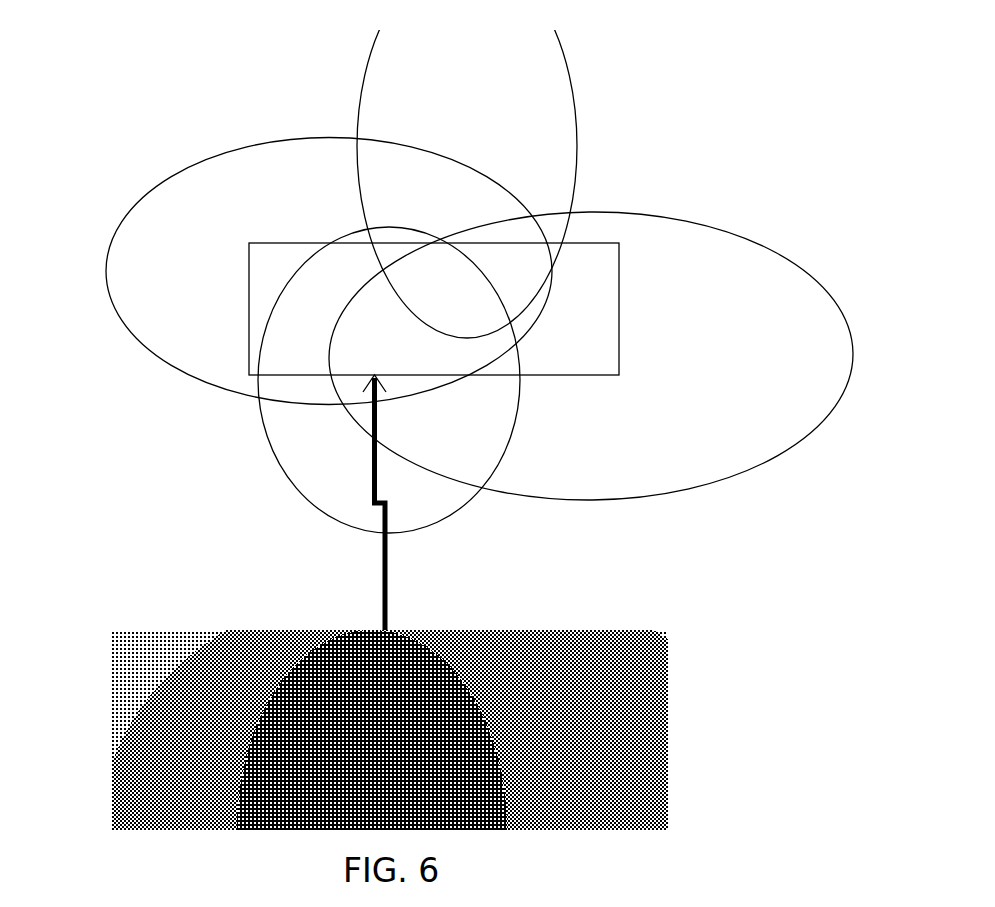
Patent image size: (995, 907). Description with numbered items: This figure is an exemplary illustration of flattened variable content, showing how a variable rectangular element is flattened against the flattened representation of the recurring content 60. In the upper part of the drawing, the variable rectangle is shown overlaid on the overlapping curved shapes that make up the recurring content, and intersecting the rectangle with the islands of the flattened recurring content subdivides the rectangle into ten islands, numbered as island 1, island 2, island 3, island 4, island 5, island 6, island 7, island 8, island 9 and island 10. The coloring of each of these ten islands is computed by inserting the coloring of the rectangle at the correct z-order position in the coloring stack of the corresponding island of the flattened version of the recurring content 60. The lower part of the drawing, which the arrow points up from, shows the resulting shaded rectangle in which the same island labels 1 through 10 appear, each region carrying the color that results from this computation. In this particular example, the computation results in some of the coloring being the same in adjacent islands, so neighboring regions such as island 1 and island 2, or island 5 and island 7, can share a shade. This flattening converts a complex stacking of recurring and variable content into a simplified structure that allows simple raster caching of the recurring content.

The flattened representation of the recurring content 60 is at (107, 729).
The island 1 is at (201, 471).
The island 2 is at (251, 506).
The island 3 is at (327, 546).
The island 4 is at (422, 499).
The island 5 is at (499, 465).
The island 6 is at (518, 537).
The island 7 is at (581, 546).
The island 8 is at (356, 450).
The island 9 is at (563, 451).
The island 10 is at (500, 589).